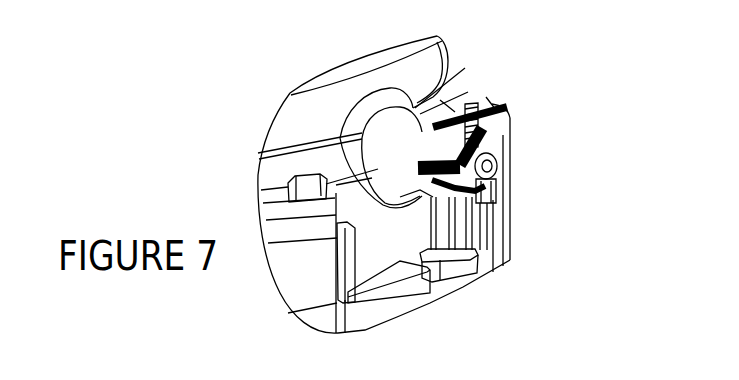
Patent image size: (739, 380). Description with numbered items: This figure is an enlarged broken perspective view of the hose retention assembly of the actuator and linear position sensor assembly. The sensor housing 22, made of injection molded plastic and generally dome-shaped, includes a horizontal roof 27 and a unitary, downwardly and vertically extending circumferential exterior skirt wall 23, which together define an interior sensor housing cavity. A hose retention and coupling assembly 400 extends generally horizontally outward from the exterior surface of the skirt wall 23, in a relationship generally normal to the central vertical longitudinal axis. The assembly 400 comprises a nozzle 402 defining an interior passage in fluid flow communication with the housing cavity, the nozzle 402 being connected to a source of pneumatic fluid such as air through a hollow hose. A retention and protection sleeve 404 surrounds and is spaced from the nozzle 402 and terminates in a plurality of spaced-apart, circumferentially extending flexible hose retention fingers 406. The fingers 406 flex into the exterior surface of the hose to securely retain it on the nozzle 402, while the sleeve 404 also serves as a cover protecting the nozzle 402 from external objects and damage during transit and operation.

The sensor housing 22 is at (290, 86).
The skirt wall 23 is at (345, 195).
The roof 27 is at (348, 71).
The hose retention and coupling assembly 400 is at (480, 108).
The nozzle 402 is at (497, 157).
The sleeve 404 is at (452, 110).
The hose retention fingers 406 is at (480, 116).